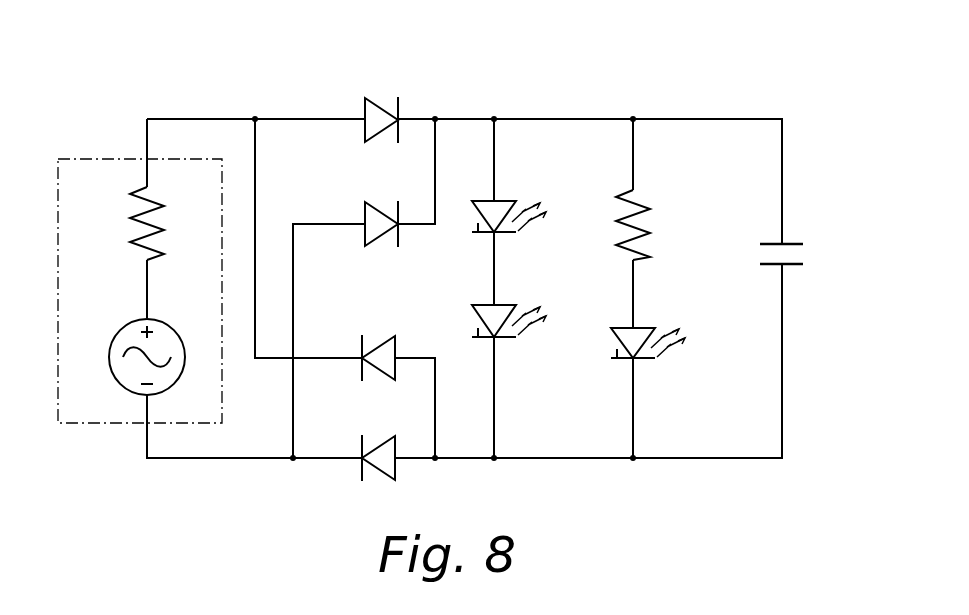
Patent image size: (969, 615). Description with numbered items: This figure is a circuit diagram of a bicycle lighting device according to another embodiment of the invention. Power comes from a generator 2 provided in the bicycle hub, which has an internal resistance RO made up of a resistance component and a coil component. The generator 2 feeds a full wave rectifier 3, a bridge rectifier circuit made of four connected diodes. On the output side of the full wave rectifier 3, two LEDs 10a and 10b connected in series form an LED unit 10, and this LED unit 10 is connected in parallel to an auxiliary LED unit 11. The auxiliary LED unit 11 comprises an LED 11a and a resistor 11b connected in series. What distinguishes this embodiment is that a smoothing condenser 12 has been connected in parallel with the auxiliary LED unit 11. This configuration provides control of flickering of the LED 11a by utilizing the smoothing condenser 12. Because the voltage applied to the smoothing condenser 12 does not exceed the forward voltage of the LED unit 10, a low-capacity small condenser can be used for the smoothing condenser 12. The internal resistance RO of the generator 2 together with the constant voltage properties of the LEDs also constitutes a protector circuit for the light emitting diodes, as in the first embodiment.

The generator 2 is at (88, 158).
The full wave rectifier 3 is at (417, 80).
The LED unit 10 is at (534, 179).
The LED 10a is at (518, 190).
The LED 10b is at (518, 300).
The auxiliary LED unit 11 is at (730, 295).
The LED 11a is at (663, 352).
The resistor 11b is at (663, 225).
The smoothing condenser 12 is at (807, 228).